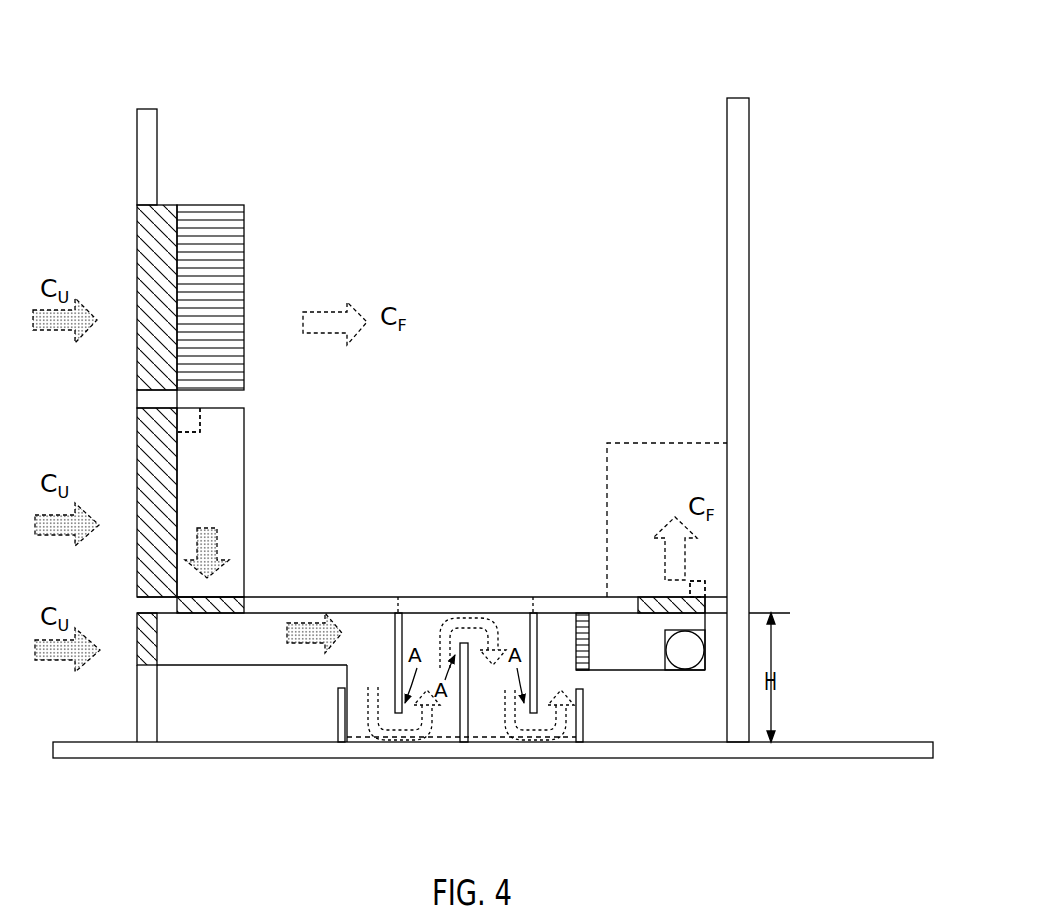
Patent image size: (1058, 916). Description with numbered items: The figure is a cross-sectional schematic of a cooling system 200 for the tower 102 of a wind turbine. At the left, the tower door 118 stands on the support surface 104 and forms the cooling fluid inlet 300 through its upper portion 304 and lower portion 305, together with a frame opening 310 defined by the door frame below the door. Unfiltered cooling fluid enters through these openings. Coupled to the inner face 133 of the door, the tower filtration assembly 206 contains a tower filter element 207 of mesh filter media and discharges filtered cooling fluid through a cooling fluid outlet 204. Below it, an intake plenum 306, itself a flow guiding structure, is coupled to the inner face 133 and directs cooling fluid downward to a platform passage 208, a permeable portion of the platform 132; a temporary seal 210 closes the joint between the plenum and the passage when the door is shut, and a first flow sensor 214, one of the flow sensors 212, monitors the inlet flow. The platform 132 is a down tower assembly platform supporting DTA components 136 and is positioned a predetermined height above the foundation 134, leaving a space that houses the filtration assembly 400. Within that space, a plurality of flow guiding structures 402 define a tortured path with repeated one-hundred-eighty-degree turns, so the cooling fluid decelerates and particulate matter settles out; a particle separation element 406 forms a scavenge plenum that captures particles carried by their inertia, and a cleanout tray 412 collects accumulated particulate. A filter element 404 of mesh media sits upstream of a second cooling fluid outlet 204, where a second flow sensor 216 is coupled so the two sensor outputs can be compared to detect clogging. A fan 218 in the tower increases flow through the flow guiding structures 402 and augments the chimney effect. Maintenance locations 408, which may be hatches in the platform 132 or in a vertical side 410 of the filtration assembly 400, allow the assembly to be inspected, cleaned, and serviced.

The cooling system 200 is at (590, 100).
The tower 102 is at (150, 128).
The tower door 118 is at (162, 200).
The cooling fluid inlet 300 is at (100, 210).
The tower filtration assembly 206 is at (230, 210).
The tower filter element 207 is at (215, 245).
The cooling fluid outlet 204 is at (248, 292).
The upper portion 304 is at (122, 345).
The lower portion 305 is at (122, 535).
The frame opening 310 is at (122, 668).
The flow sensor 212 is at (205, 422).
The first flow sensor 214 is at (189, 420).
The second flow sensor 216 is at (697, 589).
The intake plenum 306 is at (237, 425).
The inner face 133 is at (180, 502).
The platform 132 is at (720, 614).
The platform passage 208 is at (210, 615).
The seal 210 is at (232, 598).
The DTA components 136 is at (672, 470).
The support surface 104 is at (872, 748).
The foundation 134 is at (695, 745).
The filtration assembly 400 is at (245, 690).
The flow guiding structure 402 is at (398, 605).
The maintenance location 408 is at (460, 605).
The particle separation element 406 is at (347, 668).
The cleanout tray 412 is at (360, 745).
The filter element 404 is at (590, 655).
The vertical side 410 is at (582, 682).
The fan 218 is at (687, 655).